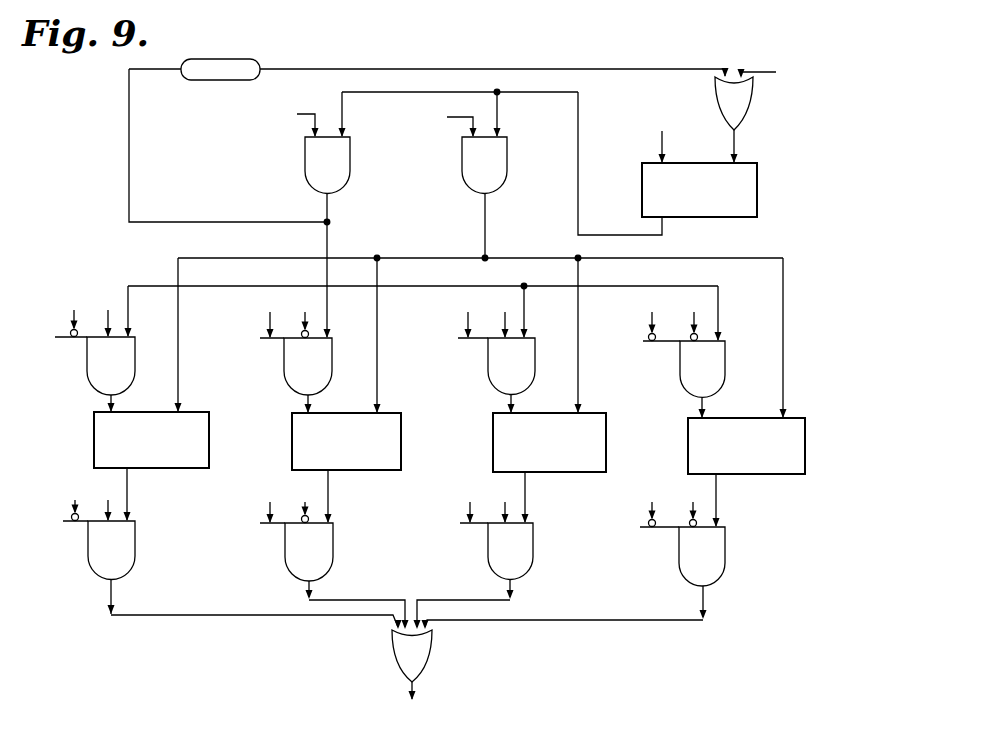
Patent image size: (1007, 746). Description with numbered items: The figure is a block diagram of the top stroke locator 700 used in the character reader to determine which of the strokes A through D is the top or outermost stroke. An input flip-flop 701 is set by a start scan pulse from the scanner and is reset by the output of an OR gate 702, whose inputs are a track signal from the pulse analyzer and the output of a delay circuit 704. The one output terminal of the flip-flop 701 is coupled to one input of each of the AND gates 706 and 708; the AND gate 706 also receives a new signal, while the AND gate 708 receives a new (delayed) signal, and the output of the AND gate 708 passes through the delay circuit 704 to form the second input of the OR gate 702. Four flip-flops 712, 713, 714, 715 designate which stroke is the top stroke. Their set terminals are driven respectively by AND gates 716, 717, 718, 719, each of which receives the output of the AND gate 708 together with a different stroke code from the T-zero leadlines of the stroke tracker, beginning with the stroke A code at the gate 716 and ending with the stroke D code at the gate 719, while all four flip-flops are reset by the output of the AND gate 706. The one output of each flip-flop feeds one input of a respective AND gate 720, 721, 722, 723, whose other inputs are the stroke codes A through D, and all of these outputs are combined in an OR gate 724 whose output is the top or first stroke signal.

The top stroke locator 700 is at (598, 26).
The input flip-flop 701 is at (757, 201).
The OR gate 702 is at (753, 108).
The delay circuit 704 is at (230, 59).
The AND gate 706 is at (504, 186).
The AND gate 708 is at (305, 173).
The flip-flop 712 is at (209, 428).
The flip-flop 713 is at (401, 445).
The flip-flop 714 is at (606, 449).
The flip-flop 715 is at (805, 451).
The AND gate 716 is at (87, 378).
The AND gate 717 is at (284, 378).
The AND gate 718 is at (488, 378).
The AND gate 719 is at (680, 376).
The AND gate 720 is at (88, 565).
The AND gate 721 is at (285, 565).
The AND gate 722 is at (488, 569).
The AND gate 723 is at (725, 562).
The OR gate 724 is at (432, 663).